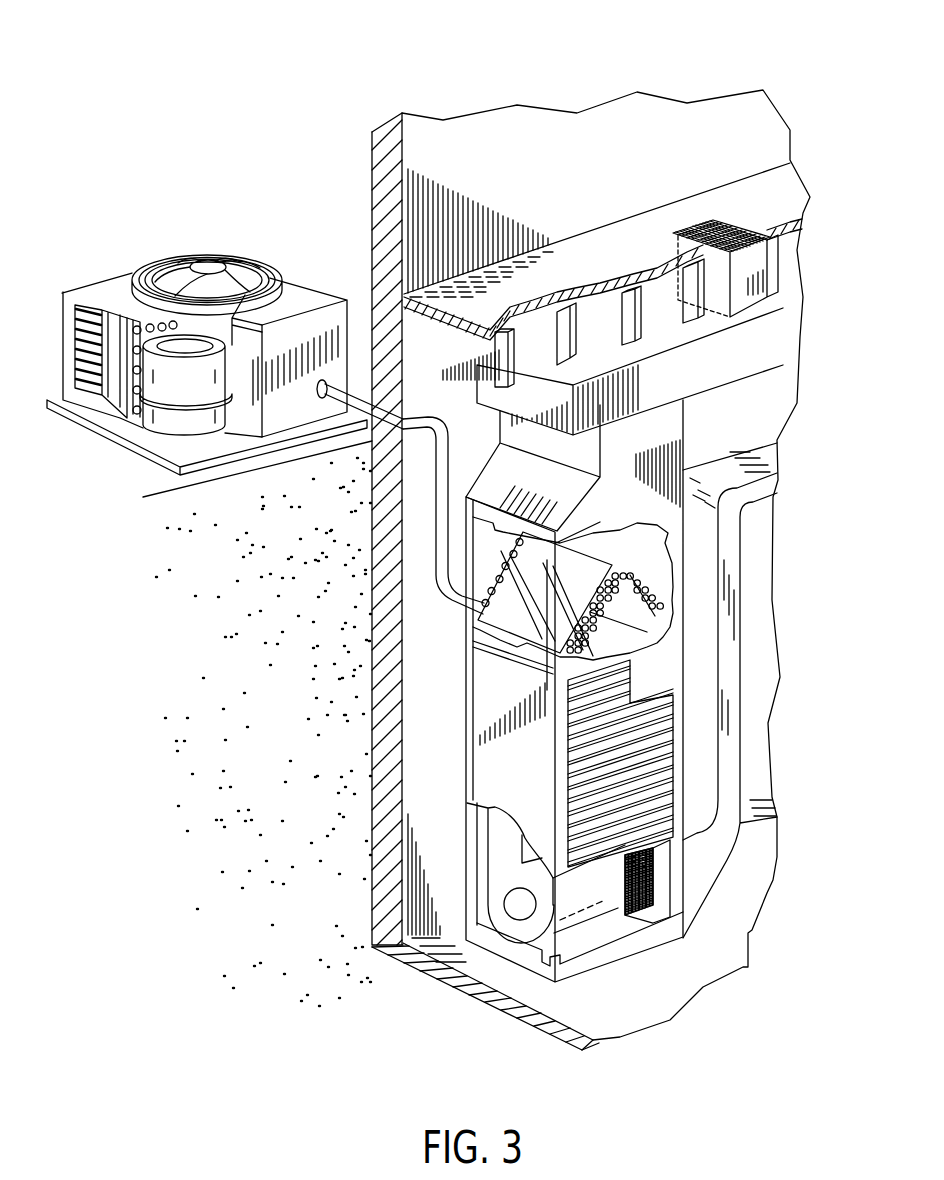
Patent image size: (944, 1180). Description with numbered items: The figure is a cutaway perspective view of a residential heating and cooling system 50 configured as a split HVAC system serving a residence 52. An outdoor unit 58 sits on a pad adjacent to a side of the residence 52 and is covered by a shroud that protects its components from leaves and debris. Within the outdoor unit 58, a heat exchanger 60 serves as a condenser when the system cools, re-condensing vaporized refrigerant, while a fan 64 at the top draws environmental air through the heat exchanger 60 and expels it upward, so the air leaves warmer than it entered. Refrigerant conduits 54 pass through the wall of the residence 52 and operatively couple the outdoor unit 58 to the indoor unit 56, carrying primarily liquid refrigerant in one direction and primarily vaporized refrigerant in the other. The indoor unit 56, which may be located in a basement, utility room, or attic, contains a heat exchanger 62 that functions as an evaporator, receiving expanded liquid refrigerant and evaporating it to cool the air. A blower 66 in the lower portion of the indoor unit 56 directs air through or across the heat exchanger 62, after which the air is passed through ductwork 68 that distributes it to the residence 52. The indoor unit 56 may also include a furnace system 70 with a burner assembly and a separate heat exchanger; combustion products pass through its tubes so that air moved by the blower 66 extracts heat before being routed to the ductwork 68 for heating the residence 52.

The residential heating and cooling system 50 is at (208, 89).
The residence 52 is at (503, 135).
The refrigerant conduits 54 is at (373, 520).
The indoor unit 56 is at (441, 746).
The outdoor unit 58 is at (168, 249).
The heat exchanger 60 is at (137, 317).
The heat exchanger 62 is at (523, 618).
The fan 64 is at (223, 268).
The blower 66 is at (515, 927).
The ductwork 68 is at (727, 357).
The furnace system 70 is at (547, 680).